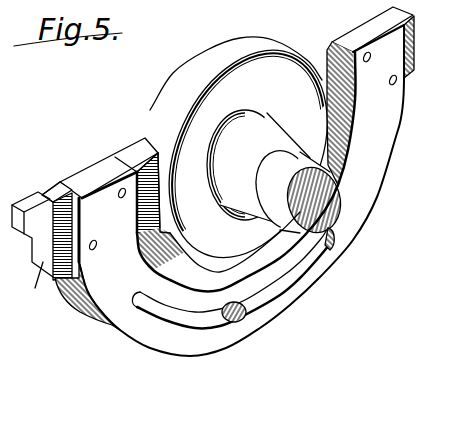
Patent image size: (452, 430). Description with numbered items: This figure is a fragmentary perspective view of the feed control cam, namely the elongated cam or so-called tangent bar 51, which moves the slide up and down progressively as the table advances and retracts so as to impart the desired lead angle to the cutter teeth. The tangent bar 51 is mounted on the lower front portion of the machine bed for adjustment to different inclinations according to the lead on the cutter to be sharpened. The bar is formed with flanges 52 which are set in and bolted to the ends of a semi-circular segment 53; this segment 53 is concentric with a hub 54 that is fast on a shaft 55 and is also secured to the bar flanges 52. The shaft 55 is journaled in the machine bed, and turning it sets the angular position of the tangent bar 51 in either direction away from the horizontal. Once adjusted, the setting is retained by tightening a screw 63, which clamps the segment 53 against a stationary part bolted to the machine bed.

The tangent bar 51 is at (26, 205).
The flanges 52 is at (47, 200).
The semi-circular segment 53 is at (143, 328).
The hub 54 is at (169, 93).
The shaft 55 is at (247, 192).
The screw 63 is at (253, 312).